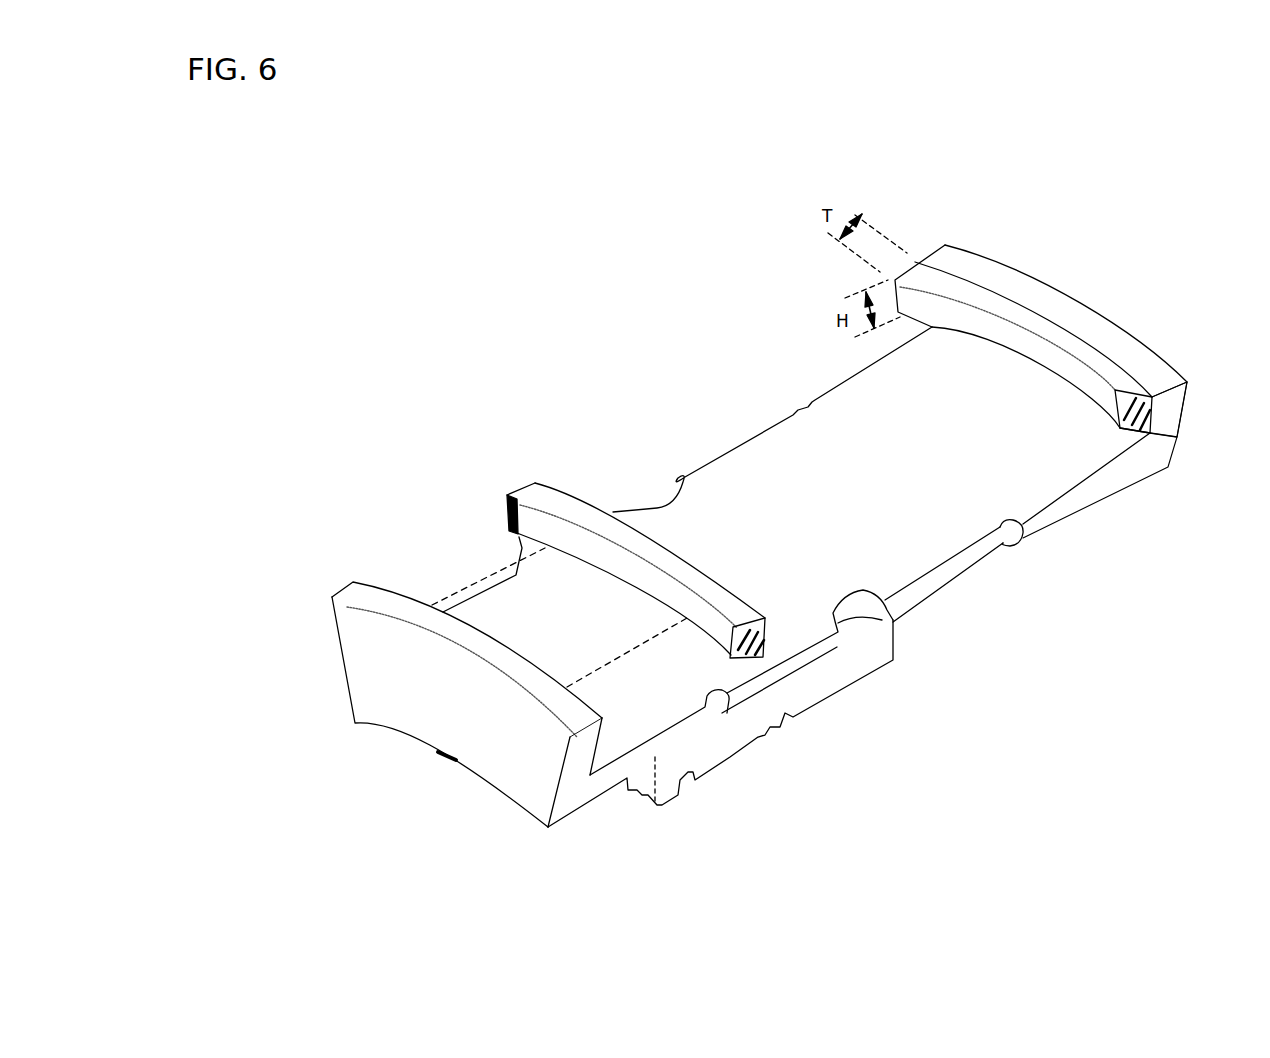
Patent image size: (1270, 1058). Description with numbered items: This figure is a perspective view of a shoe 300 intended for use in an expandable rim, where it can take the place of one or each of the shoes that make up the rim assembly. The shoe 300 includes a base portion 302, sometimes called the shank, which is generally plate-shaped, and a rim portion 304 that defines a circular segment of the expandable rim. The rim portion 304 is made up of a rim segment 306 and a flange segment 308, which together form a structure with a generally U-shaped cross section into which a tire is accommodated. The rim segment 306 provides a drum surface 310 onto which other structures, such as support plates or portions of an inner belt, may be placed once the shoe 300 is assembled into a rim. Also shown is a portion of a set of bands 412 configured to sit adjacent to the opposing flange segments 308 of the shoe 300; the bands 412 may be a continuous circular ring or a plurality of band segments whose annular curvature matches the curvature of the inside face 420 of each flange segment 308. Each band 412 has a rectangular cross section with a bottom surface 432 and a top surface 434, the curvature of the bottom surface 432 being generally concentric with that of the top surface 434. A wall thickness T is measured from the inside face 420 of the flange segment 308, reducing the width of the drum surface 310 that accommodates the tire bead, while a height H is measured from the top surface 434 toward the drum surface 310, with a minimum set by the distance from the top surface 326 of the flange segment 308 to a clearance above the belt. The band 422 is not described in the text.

The shoe 300 is at (338, 352).
The base portion 302 is at (820, 690).
The rim portion 304 is at (731, 468).
The rim segment 306 is at (947, 570).
The flange segment 308 is at (1163, 440).
The drum surface 310 is at (850, 432).
The top surface of the flange segment 326 is at (990, 268).
The bands 412 is at (575, 507).
The inside face 420 is at (1137, 445).
The front curved block 422 is at (405, 703).
The bottom surface 432 is at (1038, 387).
The top surface 434 is at (1120, 392).